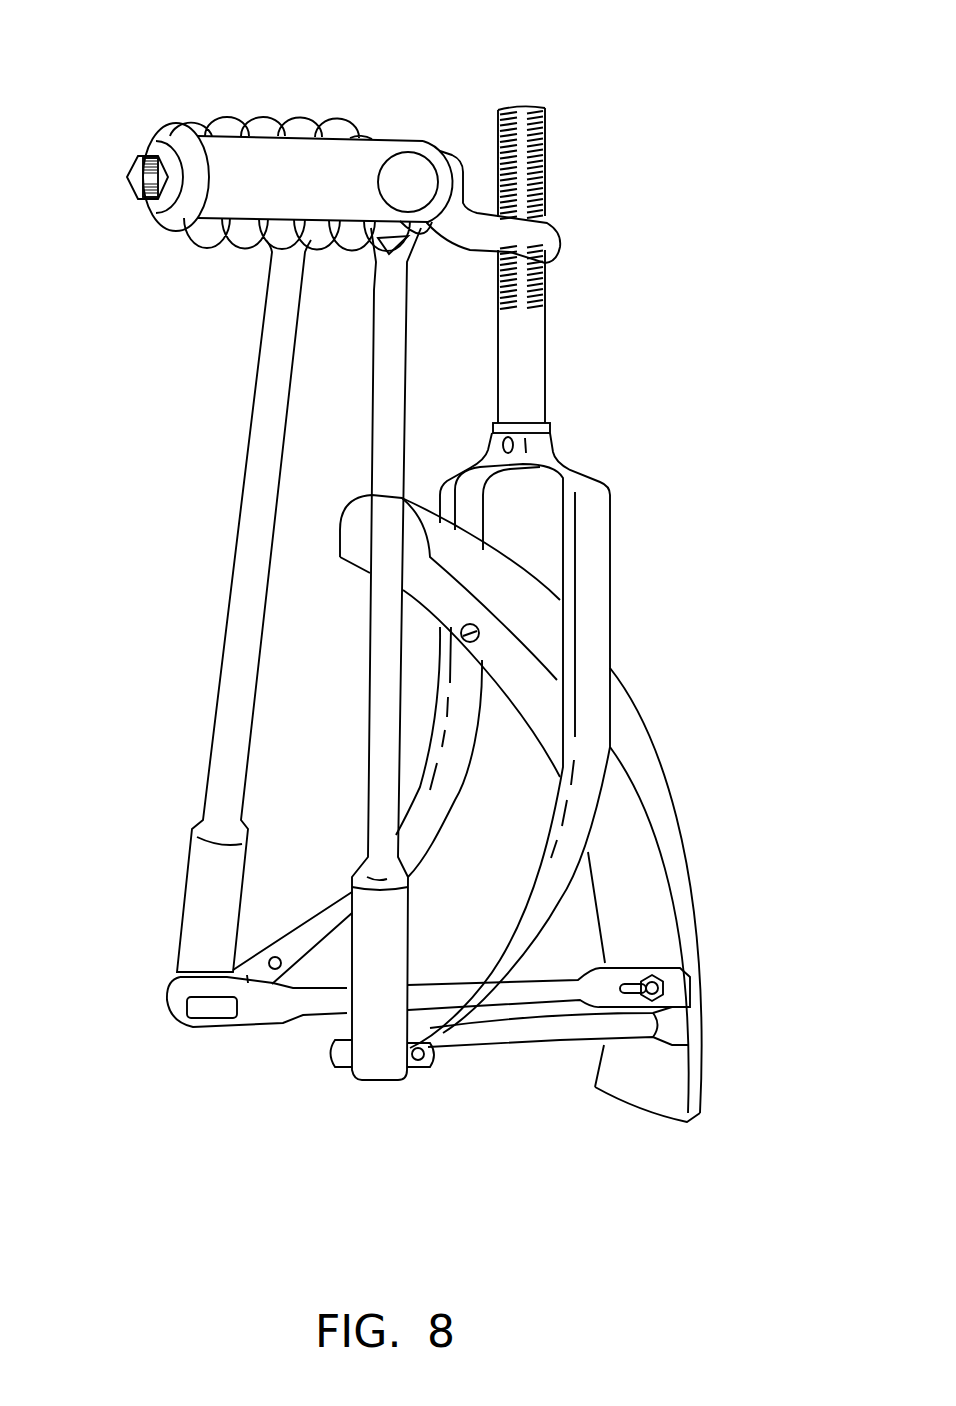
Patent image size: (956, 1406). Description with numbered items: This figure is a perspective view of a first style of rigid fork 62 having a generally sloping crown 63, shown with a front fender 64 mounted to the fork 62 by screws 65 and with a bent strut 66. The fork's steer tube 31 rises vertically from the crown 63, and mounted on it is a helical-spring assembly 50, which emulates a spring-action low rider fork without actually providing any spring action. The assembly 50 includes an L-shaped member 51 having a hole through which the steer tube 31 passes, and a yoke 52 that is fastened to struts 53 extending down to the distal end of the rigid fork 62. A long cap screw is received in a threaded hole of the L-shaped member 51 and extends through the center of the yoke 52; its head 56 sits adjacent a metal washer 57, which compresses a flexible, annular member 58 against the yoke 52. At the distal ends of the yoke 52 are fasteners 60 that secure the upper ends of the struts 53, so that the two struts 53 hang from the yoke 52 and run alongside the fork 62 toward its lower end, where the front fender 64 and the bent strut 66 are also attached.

The helical-spring assembly 50 is at (236, 80).
The L-shaped member 51 is at (556, 233).
The yoke 52 is at (317, 155).
The struts 53 is at (262, 447).
The head 56 is at (127, 177).
The metal washer 57 is at (165, 147).
The flexible annular member 58 is at (191, 207).
The fasteners 60 is at (413, 175).
The steer tube 31 is at (533, 348).
The rigid fork 62 is at (598, 618).
The sloping crown 63 is at (557, 463).
The front fender 64 is at (647, 773).
The screws 65 is at (464, 641).
The bent strut 66 is at (487, 1040).